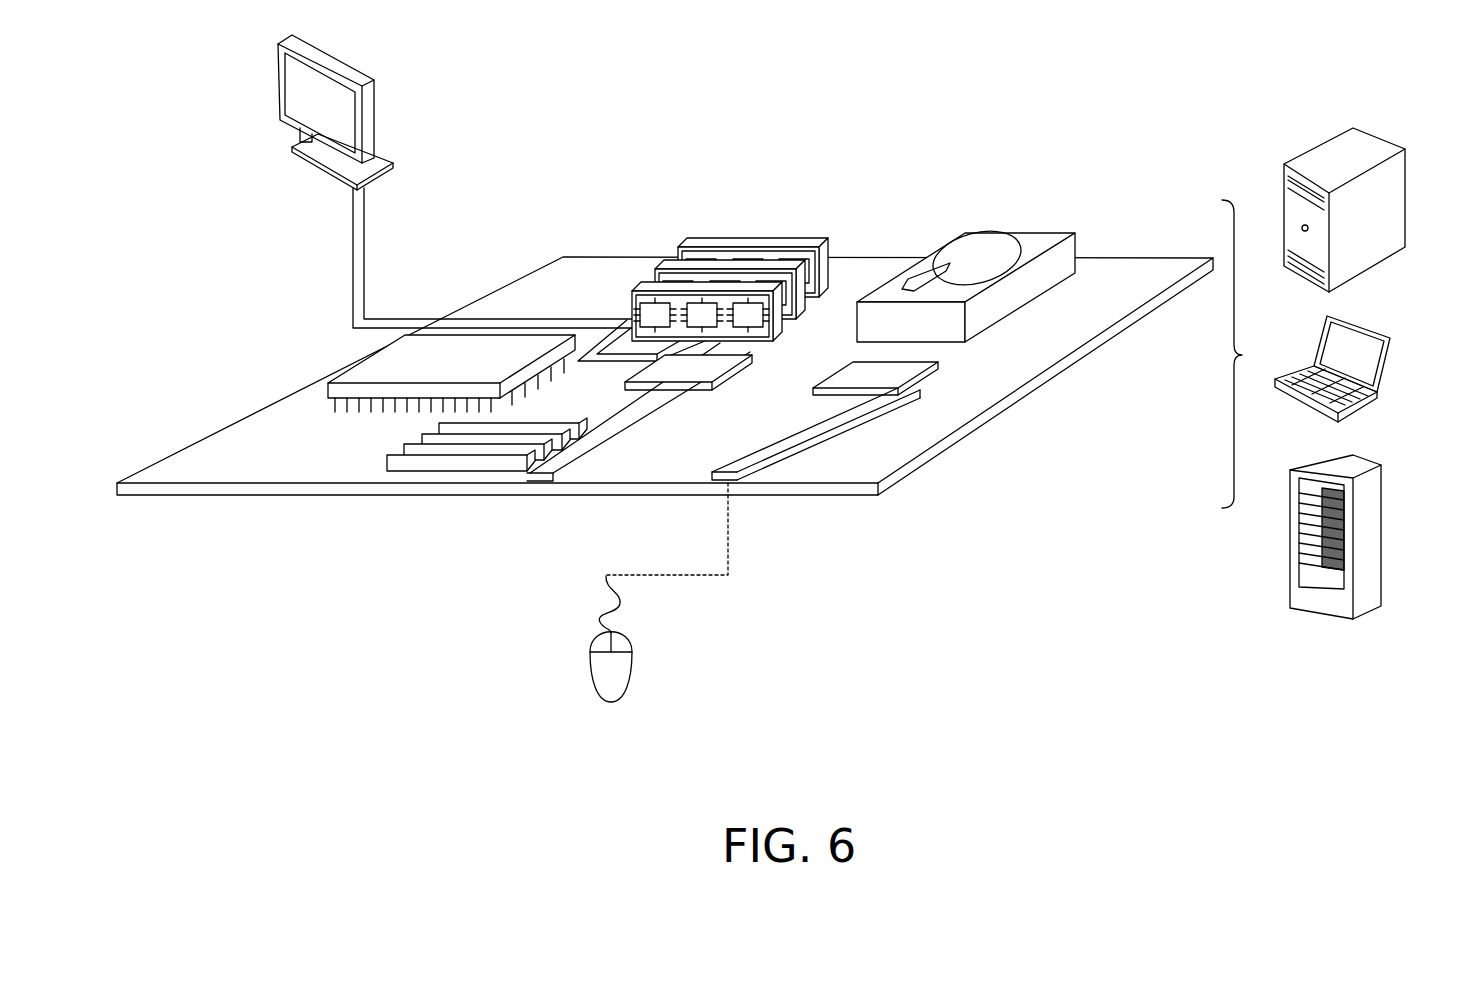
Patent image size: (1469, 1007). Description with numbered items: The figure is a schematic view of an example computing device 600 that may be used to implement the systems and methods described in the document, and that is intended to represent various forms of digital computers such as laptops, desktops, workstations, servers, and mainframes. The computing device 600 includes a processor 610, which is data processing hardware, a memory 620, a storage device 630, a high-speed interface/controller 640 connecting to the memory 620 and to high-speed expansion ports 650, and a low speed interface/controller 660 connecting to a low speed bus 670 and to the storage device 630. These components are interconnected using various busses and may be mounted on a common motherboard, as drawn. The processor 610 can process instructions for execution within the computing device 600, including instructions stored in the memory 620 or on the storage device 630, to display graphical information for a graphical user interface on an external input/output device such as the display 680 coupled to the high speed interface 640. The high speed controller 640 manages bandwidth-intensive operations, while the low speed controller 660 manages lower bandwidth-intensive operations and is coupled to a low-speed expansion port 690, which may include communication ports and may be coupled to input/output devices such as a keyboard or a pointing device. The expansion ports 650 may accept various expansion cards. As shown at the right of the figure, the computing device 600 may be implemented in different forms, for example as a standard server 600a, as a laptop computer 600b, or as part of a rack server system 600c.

The computing device 600 is at (833, 102).
The standard server 600a is at (1315, 143).
The laptop computer 600b is at (1372, 340).
The rack server system 600c is at (1380, 518).
The processor 610 is at (328, 386).
The memory 620 is at (747, 246).
The storage device 630 is at (1013, 232).
The high-speed interface/controller 640 is at (695, 392).
The high-speed expansion ports 650 is at (385, 458).
The low speed interface/controller 660 is at (866, 374).
The low speed bus 670 is at (815, 432).
The display 680 is at (278, 88).
The low-speed expansion port 690 is at (742, 487).